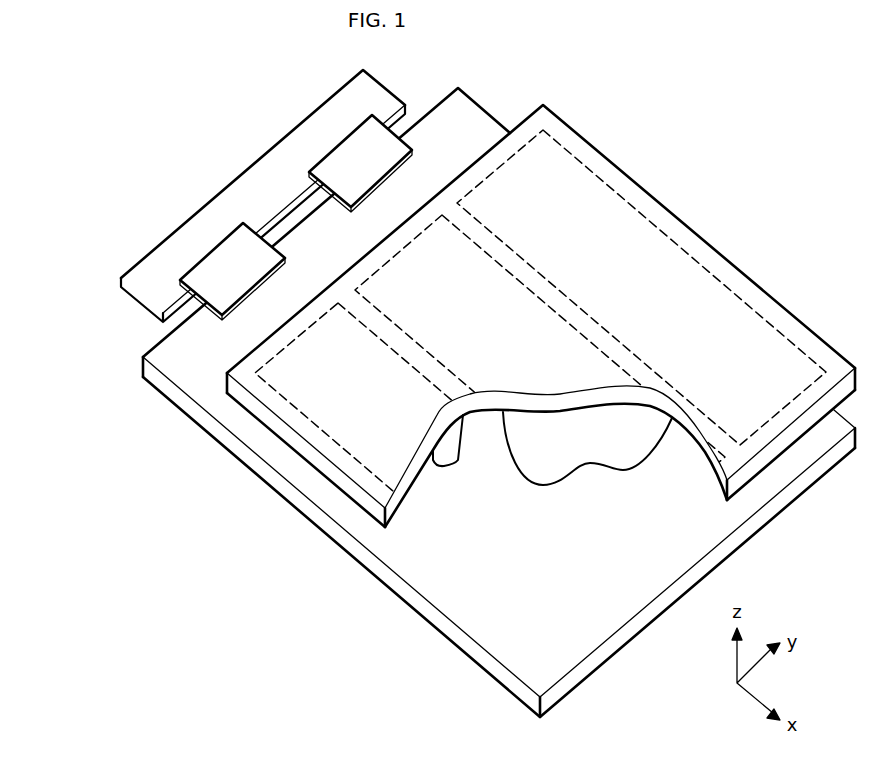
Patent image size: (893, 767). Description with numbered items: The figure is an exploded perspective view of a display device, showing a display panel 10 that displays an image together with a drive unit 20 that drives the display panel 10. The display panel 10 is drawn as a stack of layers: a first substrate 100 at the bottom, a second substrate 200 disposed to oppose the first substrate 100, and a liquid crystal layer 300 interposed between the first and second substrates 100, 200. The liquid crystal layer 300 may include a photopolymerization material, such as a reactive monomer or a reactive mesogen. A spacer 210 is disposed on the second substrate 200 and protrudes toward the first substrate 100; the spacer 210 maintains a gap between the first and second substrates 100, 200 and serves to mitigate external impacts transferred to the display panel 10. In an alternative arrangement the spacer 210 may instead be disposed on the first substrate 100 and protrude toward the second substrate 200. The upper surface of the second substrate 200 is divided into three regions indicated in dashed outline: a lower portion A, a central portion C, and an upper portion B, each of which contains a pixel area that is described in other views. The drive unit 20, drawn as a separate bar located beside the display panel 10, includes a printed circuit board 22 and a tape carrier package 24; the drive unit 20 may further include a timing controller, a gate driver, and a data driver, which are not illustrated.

The display panel 10 is at (87, 407).
The first substrate 100 is at (195, 363).
The second substrate 200 is at (474, 386).
The spacer 210 is at (448, 448).
The liquid crystal layer 300 is at (562, 450).
The lower portion A is at (307, 372).
The upper portion B is at (637, 307).
The central portion C is at (435, 320).
The drive unit 20 is at (266, 190).
The printed circuit board 22 is at (262, 178).
The tape carrier package 24 is at (220, 260).